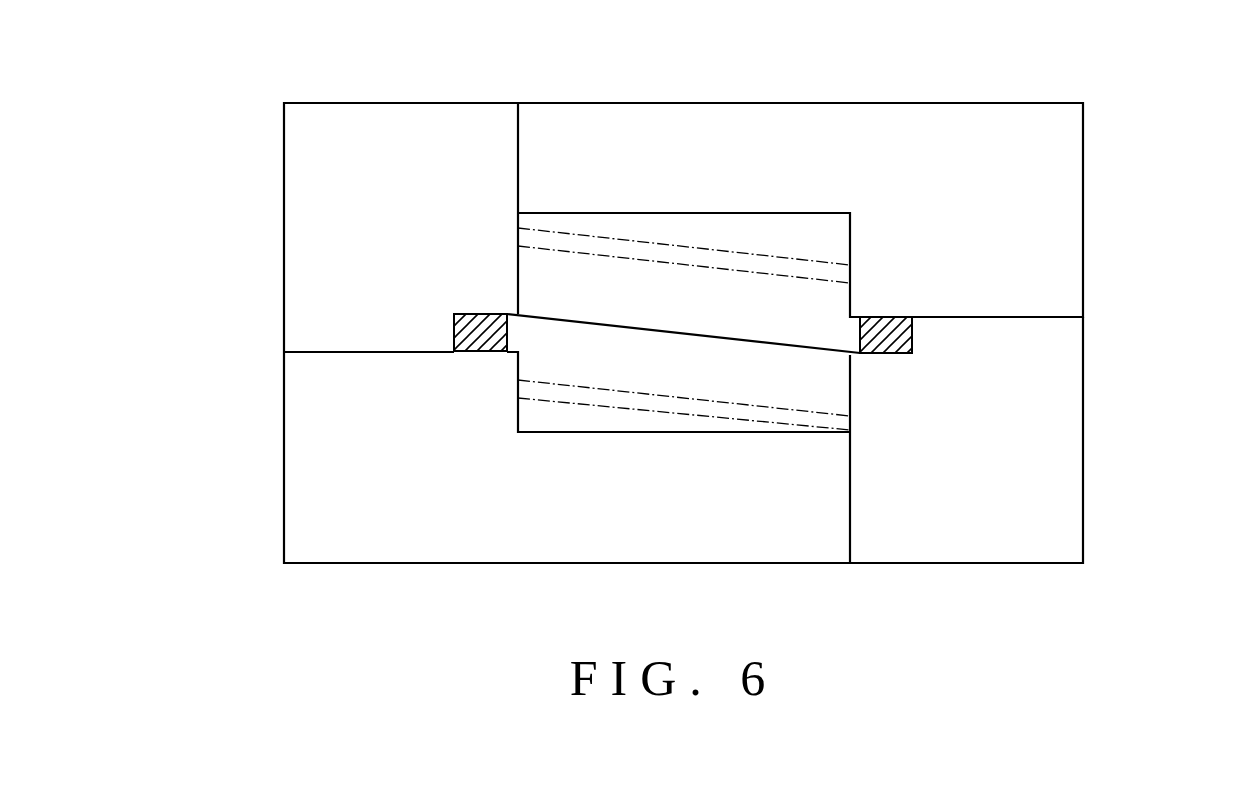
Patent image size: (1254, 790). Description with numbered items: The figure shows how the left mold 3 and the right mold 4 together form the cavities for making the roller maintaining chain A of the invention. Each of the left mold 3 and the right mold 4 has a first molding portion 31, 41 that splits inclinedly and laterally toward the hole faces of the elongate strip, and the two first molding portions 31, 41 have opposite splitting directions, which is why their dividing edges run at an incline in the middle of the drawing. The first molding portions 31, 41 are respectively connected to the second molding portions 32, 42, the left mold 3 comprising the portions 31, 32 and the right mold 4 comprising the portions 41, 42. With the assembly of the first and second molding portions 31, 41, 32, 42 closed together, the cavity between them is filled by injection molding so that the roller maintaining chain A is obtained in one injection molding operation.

The left mold 3 is at (207, 210).
The first molding portion 31 is at (329, 217).
The second molding portion 32 is at (330, 437).
The right mold 4 is at (1155, 218).
The first molding portion 41 is at (1058, 443).
The second molding portion 42 is at (1052, 205).
The roller maintaining chain A is at (688, 213).